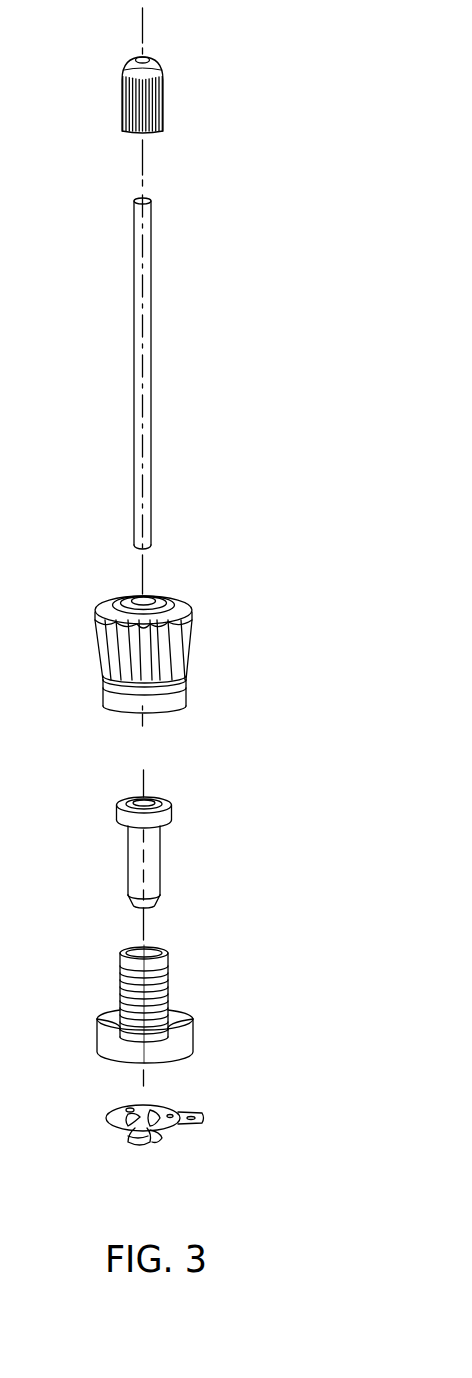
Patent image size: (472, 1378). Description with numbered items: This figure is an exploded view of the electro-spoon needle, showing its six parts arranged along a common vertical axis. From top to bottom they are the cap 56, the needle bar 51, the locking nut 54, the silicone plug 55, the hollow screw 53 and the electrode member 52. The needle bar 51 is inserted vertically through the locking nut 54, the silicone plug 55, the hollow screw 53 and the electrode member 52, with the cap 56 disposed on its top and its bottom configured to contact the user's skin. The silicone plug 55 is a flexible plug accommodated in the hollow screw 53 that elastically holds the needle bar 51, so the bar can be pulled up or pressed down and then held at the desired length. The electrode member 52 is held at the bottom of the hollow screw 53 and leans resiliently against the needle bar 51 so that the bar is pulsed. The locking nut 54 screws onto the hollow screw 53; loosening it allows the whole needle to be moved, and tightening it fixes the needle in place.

The needle bar 51 is at (145, 392).
The electrode member 52 is at (168, 1130).
The hollow screw 53 is at (152, 985).
The locking nut 54 is at (180, 660).
The silicone plug 55 is at (147, 842).
The cap 56 is at (143, 95).